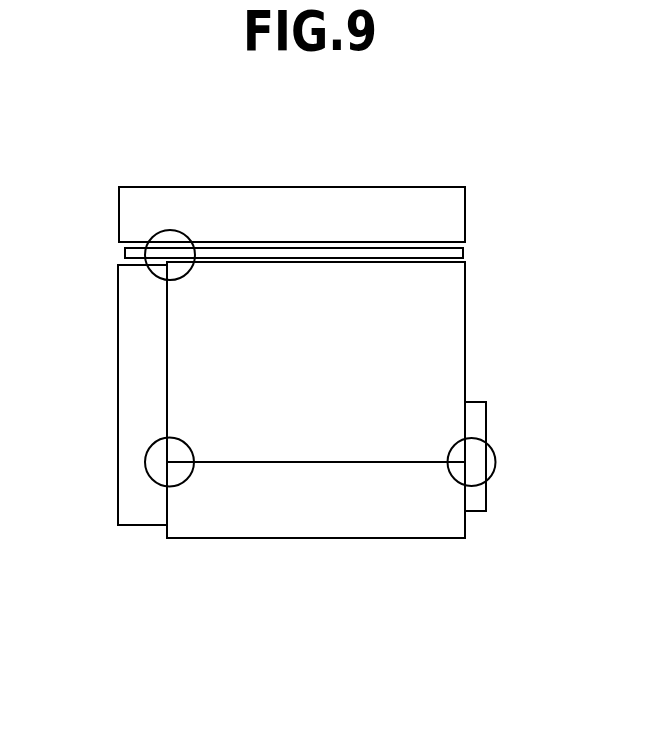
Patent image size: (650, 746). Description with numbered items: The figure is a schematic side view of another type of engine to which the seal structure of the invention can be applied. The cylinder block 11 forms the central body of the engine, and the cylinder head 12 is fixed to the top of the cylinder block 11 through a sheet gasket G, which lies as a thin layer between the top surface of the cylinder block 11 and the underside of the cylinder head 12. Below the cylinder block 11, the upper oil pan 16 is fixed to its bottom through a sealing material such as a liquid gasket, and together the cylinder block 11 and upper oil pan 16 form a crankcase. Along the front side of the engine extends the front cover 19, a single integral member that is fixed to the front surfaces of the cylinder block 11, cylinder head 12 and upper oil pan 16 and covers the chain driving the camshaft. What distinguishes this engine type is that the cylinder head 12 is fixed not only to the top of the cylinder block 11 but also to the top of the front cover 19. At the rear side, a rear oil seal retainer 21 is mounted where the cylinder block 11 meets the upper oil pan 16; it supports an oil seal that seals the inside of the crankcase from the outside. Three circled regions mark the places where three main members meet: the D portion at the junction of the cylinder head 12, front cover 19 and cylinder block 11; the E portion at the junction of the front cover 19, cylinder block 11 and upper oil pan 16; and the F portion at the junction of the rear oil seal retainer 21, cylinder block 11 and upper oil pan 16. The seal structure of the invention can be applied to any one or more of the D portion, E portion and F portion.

The cylinder head 12 is at (450, 205).
The sheet gasket G is at (455, 250).
The cylinder block 11 is at (450, 316).
The upper oil pan 16 is at (335, 520).
The front cover 19 is at (140, 337).
The rear oil seal retainer 21 is at (473, 500).
The D portion D is at (170, 230).
The E portion E is at (145, 463).
The F portion F is at (496, 458).